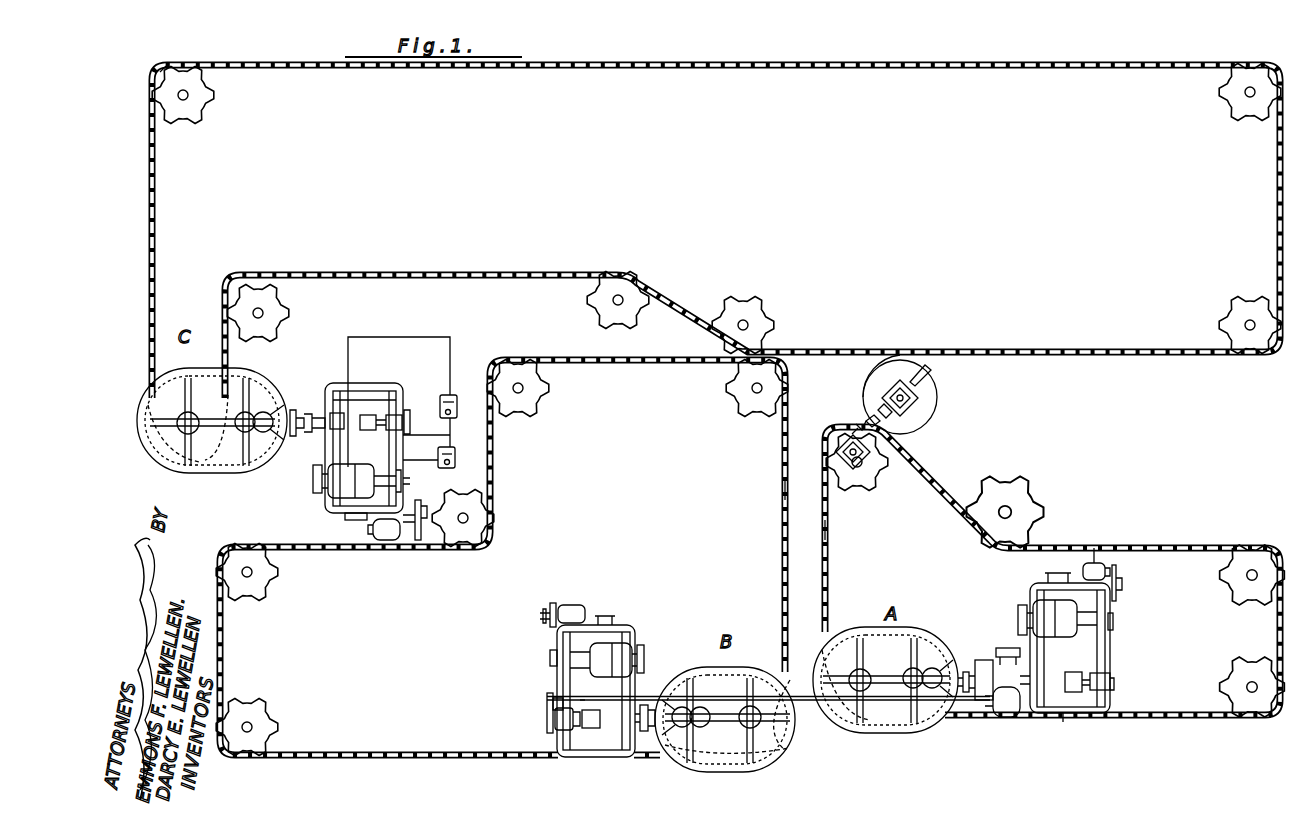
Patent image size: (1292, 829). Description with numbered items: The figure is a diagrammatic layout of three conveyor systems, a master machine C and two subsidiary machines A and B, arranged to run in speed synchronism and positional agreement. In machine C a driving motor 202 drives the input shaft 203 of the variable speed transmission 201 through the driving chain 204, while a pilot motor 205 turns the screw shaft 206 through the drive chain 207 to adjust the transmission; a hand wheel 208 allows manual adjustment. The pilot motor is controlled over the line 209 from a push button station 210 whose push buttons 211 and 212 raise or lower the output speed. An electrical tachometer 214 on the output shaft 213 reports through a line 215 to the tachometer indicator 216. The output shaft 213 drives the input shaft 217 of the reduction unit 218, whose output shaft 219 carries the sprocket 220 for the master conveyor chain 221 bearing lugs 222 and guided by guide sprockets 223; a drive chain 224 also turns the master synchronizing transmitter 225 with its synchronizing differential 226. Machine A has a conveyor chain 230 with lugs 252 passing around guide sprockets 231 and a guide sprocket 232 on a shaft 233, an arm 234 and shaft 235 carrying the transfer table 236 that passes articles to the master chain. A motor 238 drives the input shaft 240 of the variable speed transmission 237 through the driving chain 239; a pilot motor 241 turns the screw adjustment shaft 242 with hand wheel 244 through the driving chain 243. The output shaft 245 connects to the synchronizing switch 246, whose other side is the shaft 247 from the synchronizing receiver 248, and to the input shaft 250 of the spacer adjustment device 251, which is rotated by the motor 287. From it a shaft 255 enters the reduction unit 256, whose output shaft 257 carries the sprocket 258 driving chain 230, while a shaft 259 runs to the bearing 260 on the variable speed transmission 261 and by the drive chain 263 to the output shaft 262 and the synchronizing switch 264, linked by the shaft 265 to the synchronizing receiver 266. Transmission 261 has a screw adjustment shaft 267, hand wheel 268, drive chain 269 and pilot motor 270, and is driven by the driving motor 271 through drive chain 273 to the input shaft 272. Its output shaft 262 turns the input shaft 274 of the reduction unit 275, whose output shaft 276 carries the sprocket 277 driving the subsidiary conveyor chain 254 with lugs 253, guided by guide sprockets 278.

The variable speed transmission 201 is at (330, 383).
The driving motor 202 is at (350, 513).
The input shaft 203 is at (400, 480).
The driving chain 204 is at (316, 493).
The pilot motor 205 is at (386, 540).
The screw shaft 206 is at (421, 540).
The drive chain 207 is at (420, 540).
The hand wheel 208 is at (418, 498).
The line 209 is at (448, 436).
The push button station 210 is at (452, 452).
The push button 211 is at (436, 458).
The push button 212 is at (453, 462).
The output shaft 213 is at (328, 400).
The electrical tachometer 214 is at (342, 430).
The line 215 is at (385, 337).
The tachometer indicator 216 is at (452, 397).
The input shaft 217 is at (296, 436).
The reduction unit 218 is at (230, 470).
The output shaft 219 is at (178, 430).
The sprocket 220 is at (212, 473).
The master conveyor chain 221 is at (155, 242).
The lugs 222 is at (690, 63).
The guide sprockets 223 is at (188, 112).
The drive chain 224 is at (402, 417).
The master synchronizing transmitter 225 is at (370, 415).
The synchronizing differential 226 is at (340, 413).
The conveyor chain 230 is at (830, 531).
The guide sprockets 231 is at (1252, 665).
The guide sprocket 232 is at (864, 485).
The shaft 233 is at (842, 445).
The arm 234 is at (866, 421).
The shaft 235 is at (930, 410).
The transfer table 236 is at (928, 392).
The variable speed transmission 237 is at (1035, 592).
The motor 238 is at (1040, 612).
The driving chain 239 is at (1018, 615).
The input shaft 240 is at (1113, 622).
The pilot motor 241 is at (1094, 548).
The screw adjustment shaft 242 is at (1119, 588).
The driving chain 243 is at (1118, 575).
The hand wheel 244 is at (1120, 595).
The output shaft 245 is at (1020, 720).
The synchronizing switch 246 is at (1112, 690).
The shaft 247 is at (1110, 676).
The synchronizing receiver 248 is at (1073, 672).
The input shaft 250 is at (1006, 648).
The spacer adjustment device 251 is at (966, 672).
The lugs 252 is at (898, 445).
The lugs 253 is at (220, 545).
The subsidiary conveyor chain 254 is at (782, 484).
The shaft 255 is at (983, 700).
The reduction unit 256 is at (885, 733).
The output shaft 257 is at (855, 690).
The sprocket 258 is at (848, 640).
The shaft 259 is at (805, 700).
The bearing 260 is at (557, 698).
The variable speed transmission 261 is at (622, 625).
The output shaft 262 is at (555, 720).
The drive chain 263 is at (547, 708).
The synchronizing switch 264 is at (565, 728).
The shaft 265 is at (580, 700).
The synchronizing receiver 266 is at (590, 730).
The screw adjustment shaft 267 is at (543, 620).
The hand wheel 268 is at (540, 613).
The drive chain 269 is at (550, 610).
The pilot motor 270 is at (572, 605).
The driving motor 271 is at (625, 650).
The input shaft 272 is at (550, 657).
The drive chain 273 is at (645, 658).
The input shaft 274 is at (645, 732).
The reduction unit 275 is at (700, 772).
The output shaft 276 is at (775, 760).
The sprocket 277 is at (752, 680).
The guide sprockets 278 is at (550, 389).
The motor 287 is at (1003, 717).